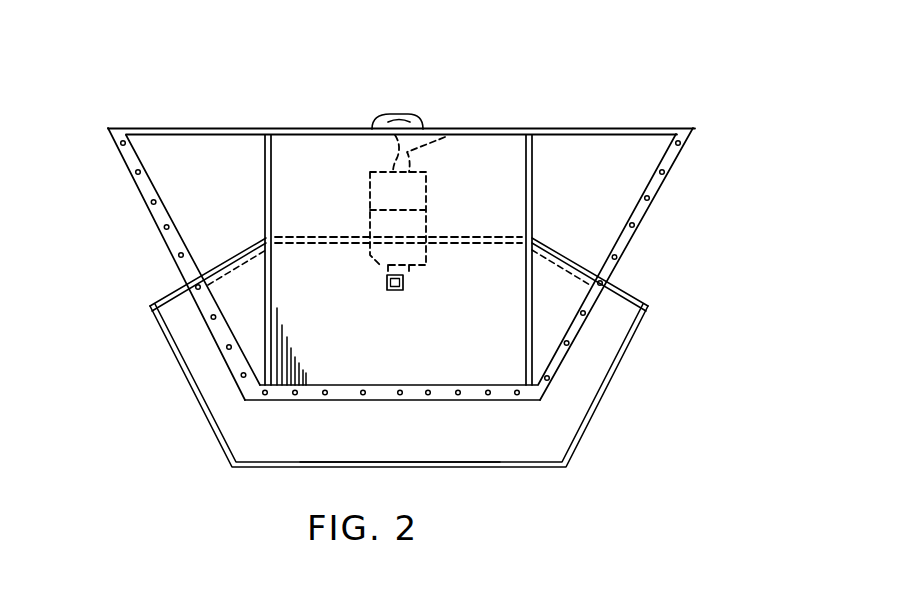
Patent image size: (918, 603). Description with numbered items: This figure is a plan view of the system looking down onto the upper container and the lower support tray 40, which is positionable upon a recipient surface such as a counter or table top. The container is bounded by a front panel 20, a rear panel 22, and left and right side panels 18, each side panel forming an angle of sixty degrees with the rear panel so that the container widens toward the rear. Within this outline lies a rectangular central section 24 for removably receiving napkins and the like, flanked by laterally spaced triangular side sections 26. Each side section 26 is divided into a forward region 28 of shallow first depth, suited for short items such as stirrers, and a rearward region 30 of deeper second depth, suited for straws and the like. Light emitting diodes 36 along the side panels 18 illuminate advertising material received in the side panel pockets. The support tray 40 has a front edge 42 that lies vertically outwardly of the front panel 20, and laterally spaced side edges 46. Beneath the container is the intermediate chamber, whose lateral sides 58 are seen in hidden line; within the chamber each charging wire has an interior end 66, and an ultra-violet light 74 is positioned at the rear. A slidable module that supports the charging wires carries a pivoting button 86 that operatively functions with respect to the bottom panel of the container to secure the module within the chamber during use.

The side panel 18 is at (160, 225).
The front panel 20 is at (472, 403).
The rear panel 22 is at (486, 130).
The rectangular central section 24 is at (338, 190).
The triangular side section 26 is at (150, 163).
The forward region 28 is at (255, 308).
The rearward region 30 is at (215, 192).
The light emitting diodes 36 is at (678, 143).
The lower support tray 40 is at (543, 425).
The front edge 42 is at (430, 468).
The side edges 46 is at (203, 412).
The lateral sides 58 is at (276, 182).
The interior end 66 is at (433, 141).
The ultra-violet light 74 is at (393, 112).
The pivoting button 86 is at (404, 284).